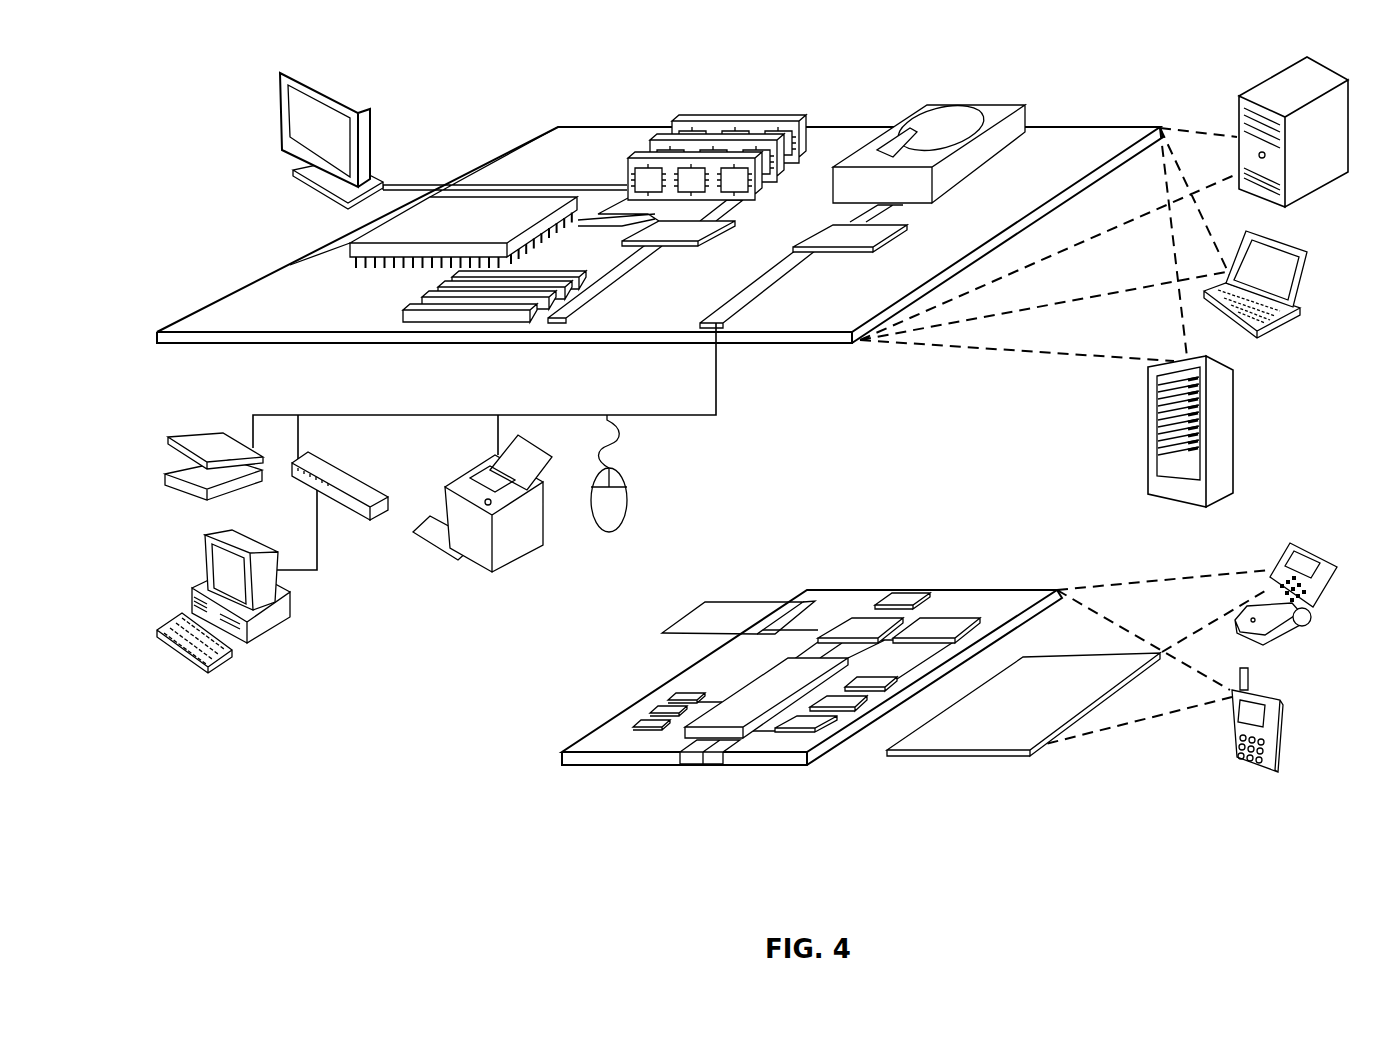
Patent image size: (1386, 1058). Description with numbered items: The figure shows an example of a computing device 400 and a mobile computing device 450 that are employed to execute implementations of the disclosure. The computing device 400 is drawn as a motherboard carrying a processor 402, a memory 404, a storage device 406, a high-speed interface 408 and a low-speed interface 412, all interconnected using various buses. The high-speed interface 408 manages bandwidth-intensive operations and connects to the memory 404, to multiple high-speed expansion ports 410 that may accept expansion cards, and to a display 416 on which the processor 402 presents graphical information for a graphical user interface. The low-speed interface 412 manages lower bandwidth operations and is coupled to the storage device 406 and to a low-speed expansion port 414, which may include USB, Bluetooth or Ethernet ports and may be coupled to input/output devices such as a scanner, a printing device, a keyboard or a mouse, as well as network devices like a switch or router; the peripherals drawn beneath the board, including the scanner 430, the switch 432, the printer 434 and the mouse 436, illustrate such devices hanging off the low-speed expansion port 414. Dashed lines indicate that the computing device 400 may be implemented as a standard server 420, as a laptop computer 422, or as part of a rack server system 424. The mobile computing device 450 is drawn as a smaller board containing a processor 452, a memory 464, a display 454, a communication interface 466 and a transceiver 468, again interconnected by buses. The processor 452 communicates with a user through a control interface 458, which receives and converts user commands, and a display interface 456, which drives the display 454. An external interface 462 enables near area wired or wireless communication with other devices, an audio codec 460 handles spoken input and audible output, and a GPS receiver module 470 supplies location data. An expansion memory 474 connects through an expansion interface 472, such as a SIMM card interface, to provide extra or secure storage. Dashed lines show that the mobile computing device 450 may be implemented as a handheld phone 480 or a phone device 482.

The computing device 400 is at (484, 104).
The processor 402 is at (350, 245).
The memory 404 is at (688, 116).
The storage device 406 is at (918, 103).
The high-speed interface 408 is at (650, 232).
The high-speed expansion ports 410 is at (423, 303).
The low-speed interface 412 is at (833, 228).
The low-speed expansion port 414 is at (727, 343).
The display 416 is at (290, 74).
The standard server 420 is at (1241, 113).
The laptop computer 422 is at (1300, 257).
The rack server system 424 is at (1148, 457).
The scanner 430 is at (192, 472).
The hub 432 is at (358, 514).
The printer 434 is at (522, 556).
The mouse 436 is at (628, 503).
The mobile computing device 450 is at (538, 760).
The processor 452 is at (738, 722).
The display 454 is at (978, 738).
The display interface 456 is at (806, 732).
The control interface 458 is at (846, 710).
The audio codec 460 is at (866, 690).
The external interface 462 is at (703, 764).
The memory 464 is at (655, 712).
The communication interface 466 is at (868, 628).
The transceiver 468 is at (937, 628).
The GPS receiver module 470 is at (901, 602).
The expansion interface 472 is at (787, 601).
The expansion memory 474 is at (712, 602).
The flip phone 480 is at (1290, 543).
The phone device 482 is at (1232, 728).